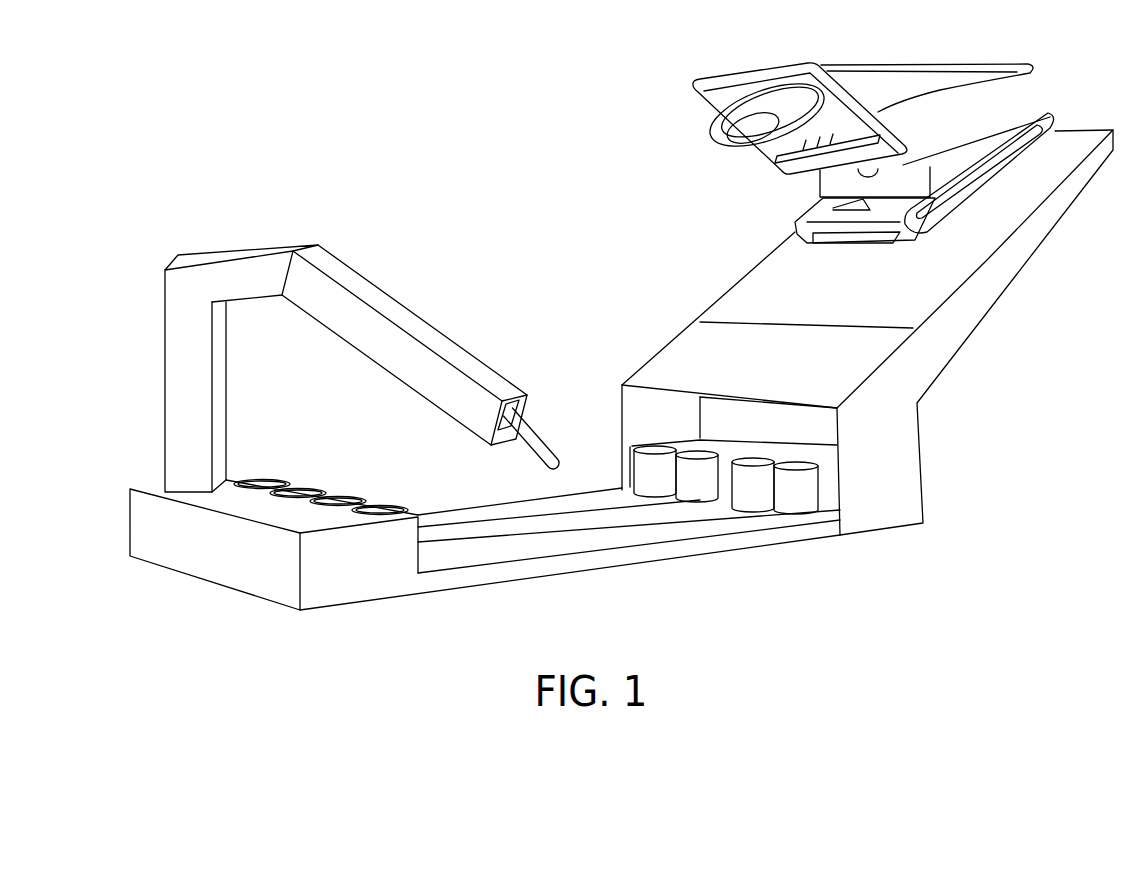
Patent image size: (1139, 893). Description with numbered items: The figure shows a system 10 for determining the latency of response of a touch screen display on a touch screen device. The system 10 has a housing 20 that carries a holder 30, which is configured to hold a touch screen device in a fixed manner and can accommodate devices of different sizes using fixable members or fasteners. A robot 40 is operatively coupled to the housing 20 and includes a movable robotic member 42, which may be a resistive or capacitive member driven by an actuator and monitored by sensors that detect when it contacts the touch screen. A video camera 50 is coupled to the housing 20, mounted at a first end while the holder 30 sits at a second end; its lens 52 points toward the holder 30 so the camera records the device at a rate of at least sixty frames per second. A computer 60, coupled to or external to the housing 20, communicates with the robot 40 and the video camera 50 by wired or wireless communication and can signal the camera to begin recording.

The system 10 is at (100, 152).
The housing 20 is at (755, 551).
The holder 30 is at (612, 538).
The robot 40 is at (200, 262).
The robotic member 42 is at (552, 448).
The video camera 50 is at (803, 58).
The lens 52 is at (737, 146).
The computer 60 is at (1038, 115).